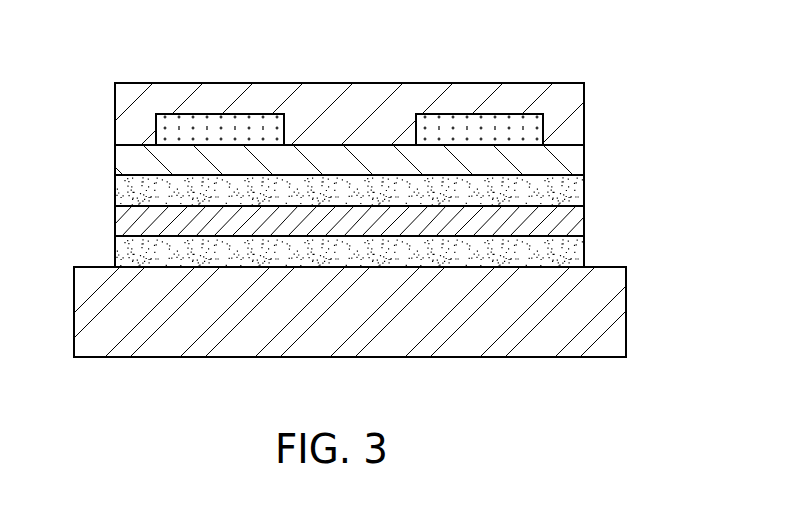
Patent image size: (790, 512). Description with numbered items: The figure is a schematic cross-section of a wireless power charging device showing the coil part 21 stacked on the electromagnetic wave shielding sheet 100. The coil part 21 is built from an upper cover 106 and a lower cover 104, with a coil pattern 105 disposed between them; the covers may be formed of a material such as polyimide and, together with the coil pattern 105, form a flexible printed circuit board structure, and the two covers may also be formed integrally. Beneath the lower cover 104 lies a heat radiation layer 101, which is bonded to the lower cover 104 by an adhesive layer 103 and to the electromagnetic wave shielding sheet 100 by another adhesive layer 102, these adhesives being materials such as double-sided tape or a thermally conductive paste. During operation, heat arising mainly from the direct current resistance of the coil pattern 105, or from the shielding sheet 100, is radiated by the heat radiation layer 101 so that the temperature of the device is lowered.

The electromagnetic wave shielding sheet 100 is at (617, 316).
The coil part 21 is at (115, 83).
The heat radiation layer 101 is at (577, 218).
The adhesive layer 102 is at (577, 250).
The adhesive layer 103 is at (577, 190).
The lower cover 104 is at (577, 157).
The coil pattern 105 is at (506, 125).
The upper cover 106 is at (580, 105).